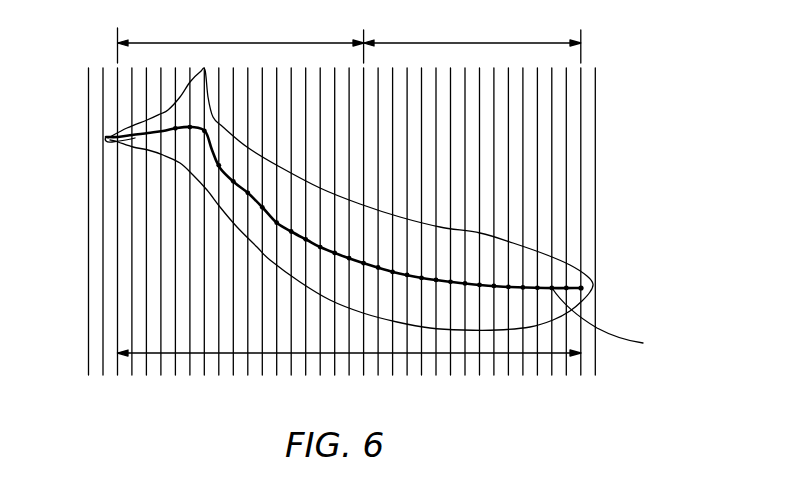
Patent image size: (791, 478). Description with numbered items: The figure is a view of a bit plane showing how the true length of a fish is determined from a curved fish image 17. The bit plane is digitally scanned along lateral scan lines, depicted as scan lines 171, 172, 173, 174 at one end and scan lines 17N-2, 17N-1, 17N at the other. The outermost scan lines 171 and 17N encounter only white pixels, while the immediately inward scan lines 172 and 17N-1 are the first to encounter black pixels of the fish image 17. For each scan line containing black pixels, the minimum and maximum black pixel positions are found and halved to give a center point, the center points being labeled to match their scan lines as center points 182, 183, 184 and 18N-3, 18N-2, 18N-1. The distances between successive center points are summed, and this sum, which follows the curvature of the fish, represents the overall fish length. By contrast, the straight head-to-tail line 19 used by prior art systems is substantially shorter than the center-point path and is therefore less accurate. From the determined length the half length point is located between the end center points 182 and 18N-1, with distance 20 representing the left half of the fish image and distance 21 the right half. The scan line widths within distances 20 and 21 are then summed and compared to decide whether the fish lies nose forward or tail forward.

The fish image 17 is at (472, 332).
The first lateral scan line 171 is at (102, 98).
The second lateral scan line 172 is at (118, 72).
The third lateral scan line 173 is at (132, 80).
The fourth lateral scan line 174 is at (147, 82).
The Nth lateral scan line 17N is at (595, 87).
The (N-1)th lateral scan line 17N-1 is at (581, 115).
The (N-2)th lateral scan line 17N-2 is at (566, 151).
The center point 182 is at (104, 137).
The center point 183 is at (145, 133).
The center point 184 is at (382, 397).
The center point 18N-1 is at (593, 285).
The center point 18N-2 is at (583, 289).
The center point 18N-3 is at (618, 325).
The head to tail line 19 is at (227, 353).
The left half distance 20 is at (259, 42).
The right half distance 21 is at (480, 41).